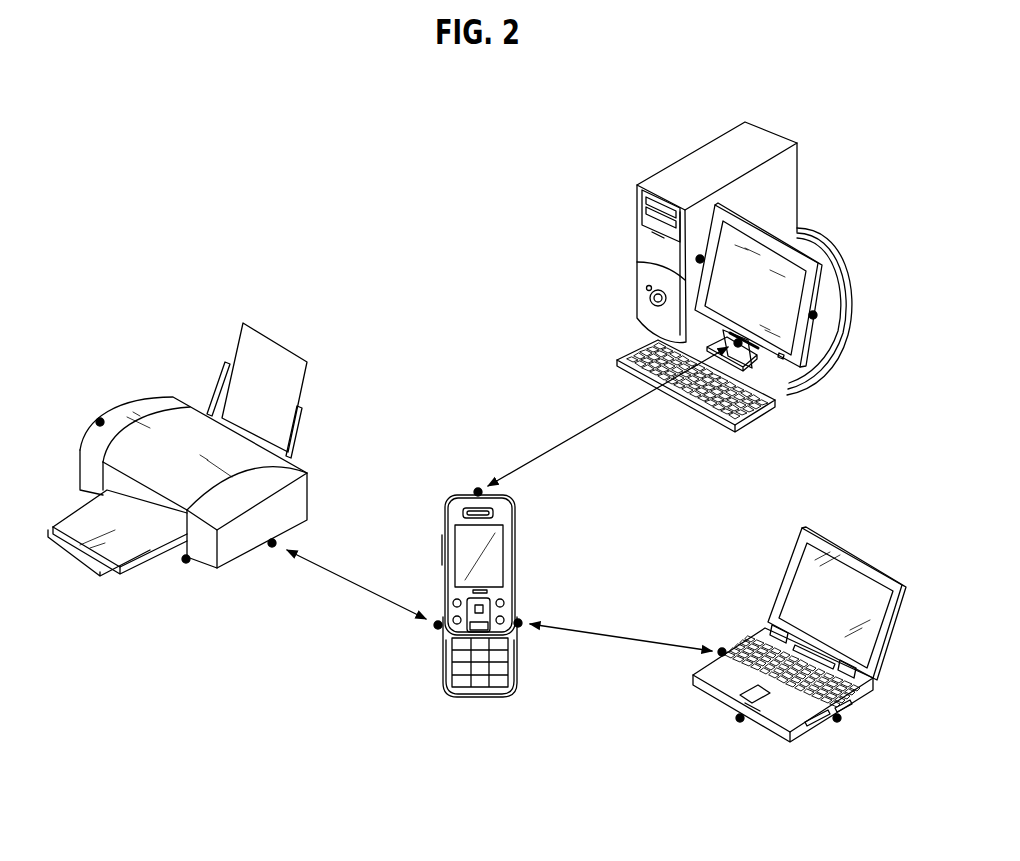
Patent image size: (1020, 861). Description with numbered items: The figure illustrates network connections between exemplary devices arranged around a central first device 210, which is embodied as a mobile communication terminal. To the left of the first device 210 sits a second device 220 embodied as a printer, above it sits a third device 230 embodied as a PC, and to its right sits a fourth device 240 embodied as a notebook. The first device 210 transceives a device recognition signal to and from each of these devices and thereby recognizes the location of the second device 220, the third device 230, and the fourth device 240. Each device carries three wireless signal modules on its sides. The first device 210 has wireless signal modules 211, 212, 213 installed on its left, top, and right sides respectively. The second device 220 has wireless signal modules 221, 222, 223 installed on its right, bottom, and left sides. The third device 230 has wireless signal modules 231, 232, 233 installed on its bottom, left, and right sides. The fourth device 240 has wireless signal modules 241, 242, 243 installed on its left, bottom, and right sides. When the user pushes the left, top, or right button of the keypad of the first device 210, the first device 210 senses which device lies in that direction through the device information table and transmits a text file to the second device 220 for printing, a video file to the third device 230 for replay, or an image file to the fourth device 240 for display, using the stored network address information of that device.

The first device 210 is at (515, 519).
The 1-1 wireless signal module 211 is at (437, 628).
The 1-2 wireless signal module 212 is at (478, 490).
The 1-3 wireless signal module 213 is at (518, 627).
The second device 220 is at (163, 400).
The 2-1 wireless signal module 221 is at (272, 547).
The 2-2 wireless signal module 222 is at (185, 563).
The 2-3 wireless signal module 223 is at (100, 420).
The third device 230 is at (778, 230).
The 3-1 wireless signal module 231 is at (739, 347).
The 3-2 wireless signal module 232 is at (696, 259).
The 3-3 wireless signal module 233 is at (817, 315).
The fourth device 240 is at (853, 557).
The 4-1 wireless signal module 241 is at (722, 648).
The 4-2 wireless signal module 242 is at (740, 722).
The 4-3 wireless signal module 243 is at (841, 720).